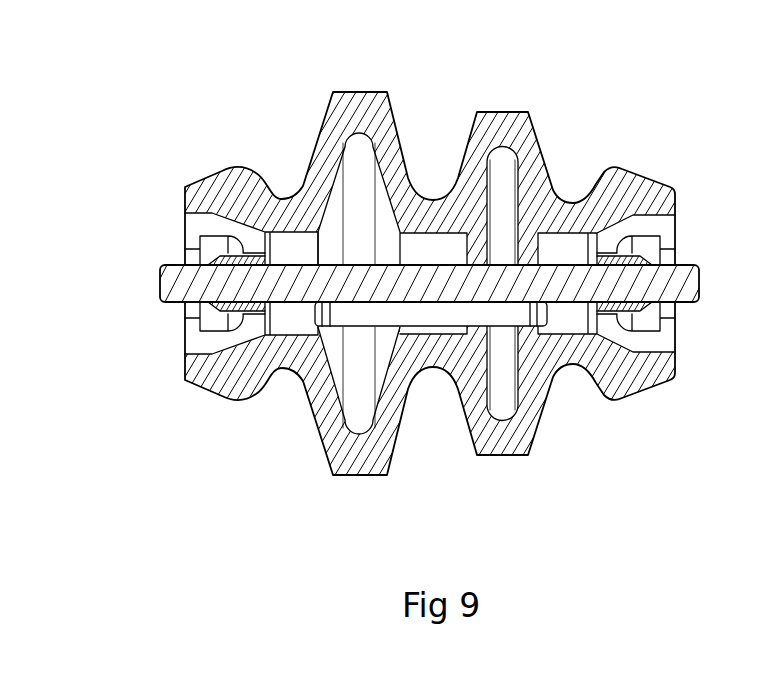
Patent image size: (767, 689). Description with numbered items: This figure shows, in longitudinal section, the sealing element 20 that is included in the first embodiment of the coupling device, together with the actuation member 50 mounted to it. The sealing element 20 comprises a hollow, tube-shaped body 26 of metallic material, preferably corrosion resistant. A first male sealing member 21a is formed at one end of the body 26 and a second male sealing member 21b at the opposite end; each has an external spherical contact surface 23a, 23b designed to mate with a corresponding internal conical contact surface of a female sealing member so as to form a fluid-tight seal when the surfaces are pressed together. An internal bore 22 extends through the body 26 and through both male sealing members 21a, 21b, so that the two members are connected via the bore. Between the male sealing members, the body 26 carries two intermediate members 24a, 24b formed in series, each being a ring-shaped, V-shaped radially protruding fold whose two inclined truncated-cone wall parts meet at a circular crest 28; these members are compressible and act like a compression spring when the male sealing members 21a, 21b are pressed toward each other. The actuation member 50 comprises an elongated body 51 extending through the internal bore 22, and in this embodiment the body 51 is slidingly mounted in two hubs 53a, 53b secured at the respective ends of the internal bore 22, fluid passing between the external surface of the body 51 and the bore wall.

The sealing element 20 is at (470, 64).
The first male sealing member 21a is at (640, 182).
The second male sealing member 21b is at (205, 186).
The internal bore 22 is at (654, 318).
The external spherical contact surface 23a is at (647, 395).
The external spherical contact surface 23b is at (204, 397).
The intermediate member 24a is at (500, 485).
The intermediate member 24b is at (356, 501).
The body 26 is at (283, 203).
The crest 28 is at (353, 103).
The actuation member 50 is at (157, 324).
The elongated body 51 is at (182, 287).
The hub 53a is at (630, 257).
The hub 53b is at (222, 257).